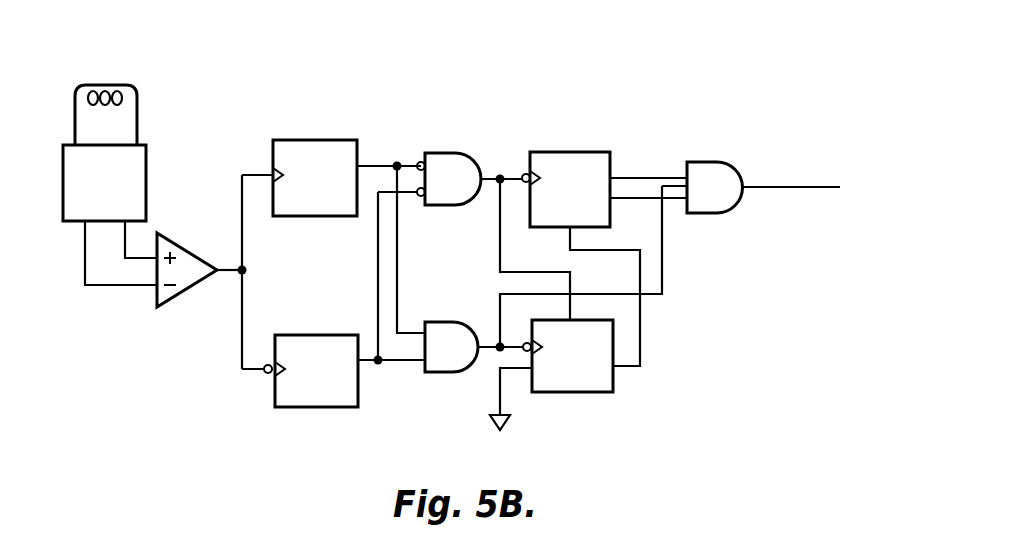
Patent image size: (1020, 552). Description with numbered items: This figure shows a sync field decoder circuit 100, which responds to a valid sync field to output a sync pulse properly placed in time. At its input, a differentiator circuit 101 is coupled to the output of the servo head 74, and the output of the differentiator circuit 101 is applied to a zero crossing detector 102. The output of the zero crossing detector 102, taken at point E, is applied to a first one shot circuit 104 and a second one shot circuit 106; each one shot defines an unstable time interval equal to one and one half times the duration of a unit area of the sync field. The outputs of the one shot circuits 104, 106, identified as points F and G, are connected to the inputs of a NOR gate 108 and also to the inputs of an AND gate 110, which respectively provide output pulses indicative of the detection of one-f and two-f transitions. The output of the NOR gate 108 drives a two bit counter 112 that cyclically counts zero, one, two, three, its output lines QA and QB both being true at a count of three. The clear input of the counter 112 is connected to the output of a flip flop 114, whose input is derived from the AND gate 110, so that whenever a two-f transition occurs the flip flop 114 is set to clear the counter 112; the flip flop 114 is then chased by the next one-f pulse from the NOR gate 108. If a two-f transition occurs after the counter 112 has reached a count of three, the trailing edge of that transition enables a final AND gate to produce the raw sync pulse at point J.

The sync field decoder circuit 100 is at (652, 138).
The servo head 74 is at (137, 91).
The differentiator circuit 101 is at (146, 172).
The zero crossing detector 102 is at (184, 243).
The first one shot circuit 104 is at (342, 140).
The second one shot circuit 106 is at (338, 335).
The NOR gate 108 is at (432, 154).
The AND gate 110 is at (428, 405).
The two bit counter 112 is at (610, 222).
The flip flop 114 is at (613, 378).